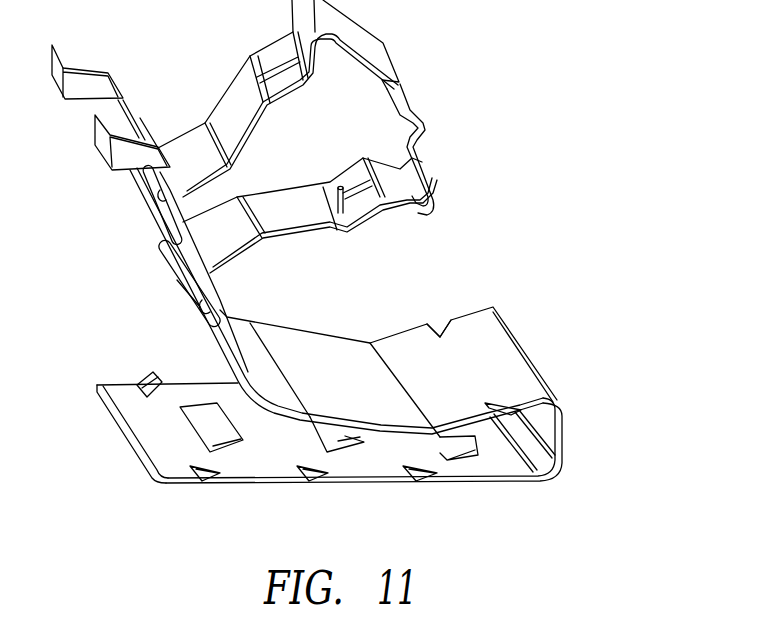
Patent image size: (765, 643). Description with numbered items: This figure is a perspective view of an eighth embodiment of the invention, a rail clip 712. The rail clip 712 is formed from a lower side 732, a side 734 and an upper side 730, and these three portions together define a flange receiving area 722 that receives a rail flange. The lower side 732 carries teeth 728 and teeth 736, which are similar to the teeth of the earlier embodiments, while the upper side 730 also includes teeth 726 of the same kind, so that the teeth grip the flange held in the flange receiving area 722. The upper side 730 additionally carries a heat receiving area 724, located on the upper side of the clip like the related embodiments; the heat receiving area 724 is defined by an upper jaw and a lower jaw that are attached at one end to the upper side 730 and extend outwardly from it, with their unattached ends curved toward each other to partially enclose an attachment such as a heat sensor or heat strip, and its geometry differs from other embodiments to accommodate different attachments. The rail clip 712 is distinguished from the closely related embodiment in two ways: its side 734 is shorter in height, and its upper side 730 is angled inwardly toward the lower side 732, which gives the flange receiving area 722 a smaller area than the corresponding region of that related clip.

The rail clip 712 is at (500, 247).
The flange receiving area 722 is at (167, 343).
The heat receiving area 724 is at (330, 162).
The teeth 726 is at (438, 322).
The teeth 728 is at (146, 374).
The upper side 730 is at (476, 387).
The lower side 732 is at (300, 452).
The side 734 is at (565, 434).
The teeth 736 is at (358, 442).